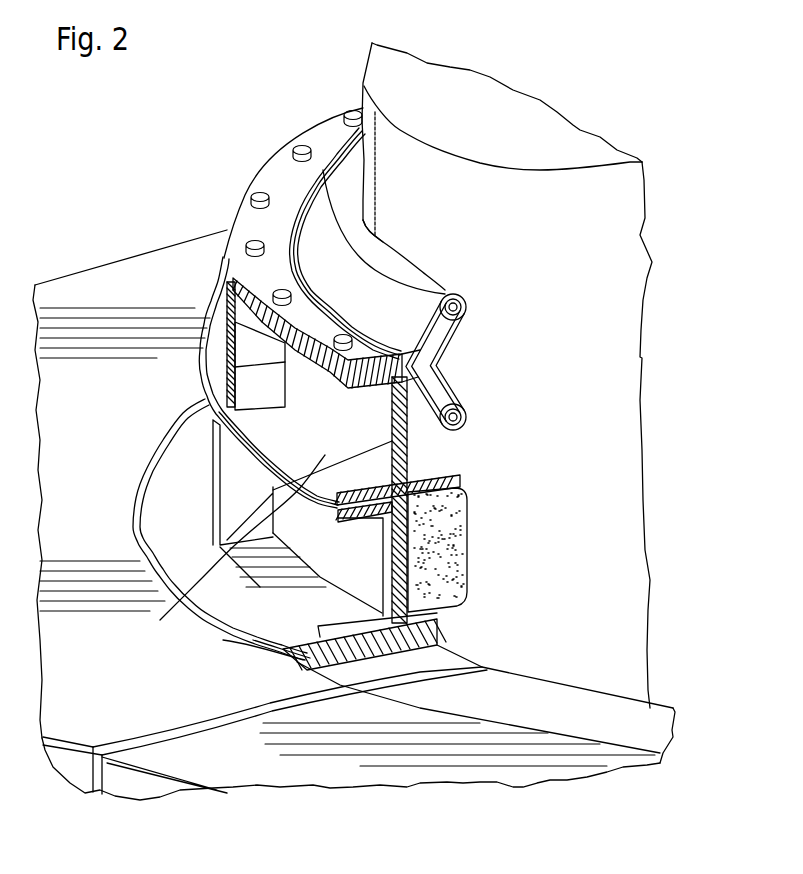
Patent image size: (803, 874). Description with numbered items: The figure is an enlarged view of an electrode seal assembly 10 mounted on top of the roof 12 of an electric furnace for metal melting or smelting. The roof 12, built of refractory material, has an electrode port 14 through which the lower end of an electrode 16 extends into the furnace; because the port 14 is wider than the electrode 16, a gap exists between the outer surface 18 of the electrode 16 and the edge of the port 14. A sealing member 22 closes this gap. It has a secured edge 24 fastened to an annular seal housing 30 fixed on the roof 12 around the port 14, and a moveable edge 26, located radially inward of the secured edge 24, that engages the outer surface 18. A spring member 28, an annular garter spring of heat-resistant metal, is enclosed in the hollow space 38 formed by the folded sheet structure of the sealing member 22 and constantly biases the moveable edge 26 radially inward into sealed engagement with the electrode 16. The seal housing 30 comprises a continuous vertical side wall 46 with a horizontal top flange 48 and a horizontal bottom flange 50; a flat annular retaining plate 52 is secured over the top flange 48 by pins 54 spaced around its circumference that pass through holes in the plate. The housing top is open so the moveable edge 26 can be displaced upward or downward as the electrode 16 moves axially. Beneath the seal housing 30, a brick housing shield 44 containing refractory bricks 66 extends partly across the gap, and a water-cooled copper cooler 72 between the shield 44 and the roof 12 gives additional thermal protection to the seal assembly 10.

The electrode seal assembly 10 is at (468, 370).
The roof 12 is at (62, 290).
The electrode port 14 is at (610, 698).
The electrode 16 is at (643, 355).
The outer surface 18 is at (576, 417).
The sealing member 22 is at (382, 243).
The secured edge 24 is at (226, 300).
The moveable edge 26 is at (466, 437).
The spring member 28 is at (466, 393).
The seal housing 30 is at (213, 314).
The hollow space 38 is at (465, 322).
The brick housing shield 44 is at (328, 548).
The vertical side wall 46 is at (392, 430).
The top flange 48 is at (287, 362).
The bottom flange 50 is at (182, 600).
The retaining plate 52 is at (242, 218).
The pins 54 is at (302, 147).
The refractory bricks 66 is at (468, 560).
The water-cooled copper cooler 72 is at (245, 612).